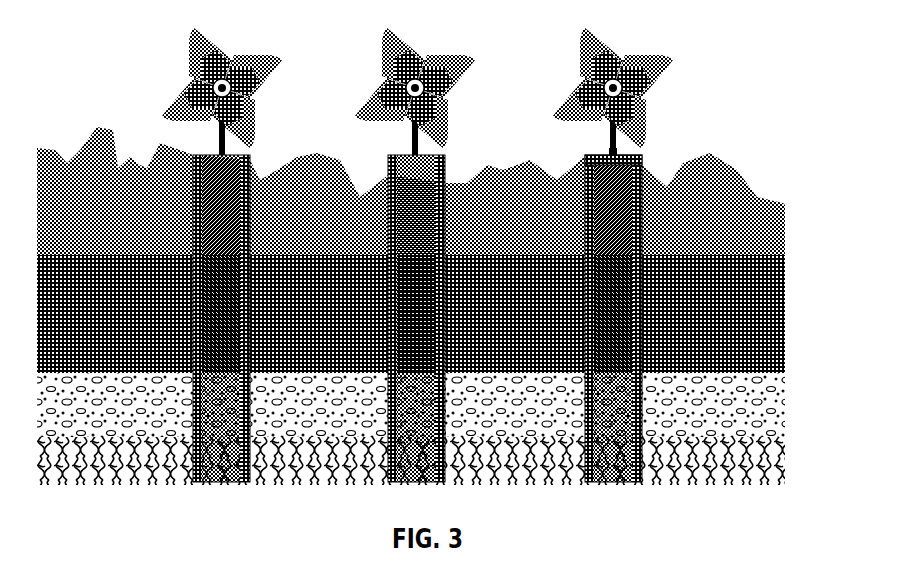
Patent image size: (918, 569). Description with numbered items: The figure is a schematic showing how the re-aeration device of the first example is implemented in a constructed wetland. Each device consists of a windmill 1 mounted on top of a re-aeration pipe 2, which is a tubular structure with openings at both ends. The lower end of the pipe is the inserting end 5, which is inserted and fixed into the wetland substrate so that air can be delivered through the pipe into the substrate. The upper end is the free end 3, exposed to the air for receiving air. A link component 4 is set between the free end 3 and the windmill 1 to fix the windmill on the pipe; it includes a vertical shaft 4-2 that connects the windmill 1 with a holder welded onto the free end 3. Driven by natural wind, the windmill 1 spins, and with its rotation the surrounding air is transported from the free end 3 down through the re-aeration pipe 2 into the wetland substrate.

The windmill 1 is at (657, 70).
The re-aeration pipe 2 is at (645, 234).
The free end of a re-aeration pipe 3 is at (703, 150).
The link component 4 is at (716, 131).
The vertical shaft 4-2 is at (613, 142).
The inserting end of a re-aeration pipe 5 is at (645, 433).